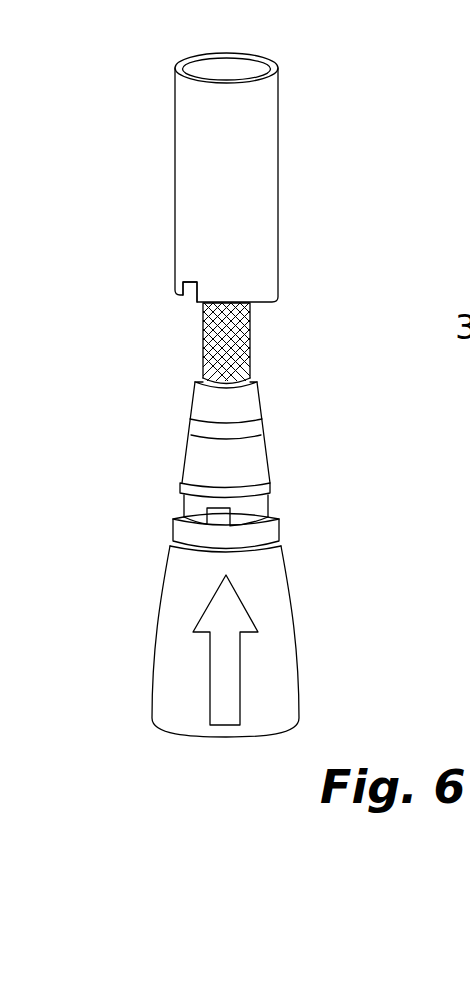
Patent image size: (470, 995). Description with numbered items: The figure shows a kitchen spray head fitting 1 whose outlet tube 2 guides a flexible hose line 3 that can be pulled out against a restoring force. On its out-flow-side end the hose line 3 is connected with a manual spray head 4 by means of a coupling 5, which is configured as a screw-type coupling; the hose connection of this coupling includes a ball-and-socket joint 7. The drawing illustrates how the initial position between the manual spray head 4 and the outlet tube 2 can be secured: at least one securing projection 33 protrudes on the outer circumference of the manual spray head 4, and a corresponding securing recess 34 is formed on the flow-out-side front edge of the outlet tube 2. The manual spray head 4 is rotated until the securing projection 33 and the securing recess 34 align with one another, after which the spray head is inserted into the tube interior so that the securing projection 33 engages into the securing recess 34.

The kitchen spray head fitting 1 is at (364, 224).
The outlet tube 2 is at (260, 213).
The flexible hose line 3 is at (251, 323).
The manual spray head 4 is at (283, 642).
The coupling 5 is at (278, 504).
The ball-and-socket joint 7 is at (277, 442).
The securing projection 33 is at (215, 494).
The securing recess 34 is at (191, 307).